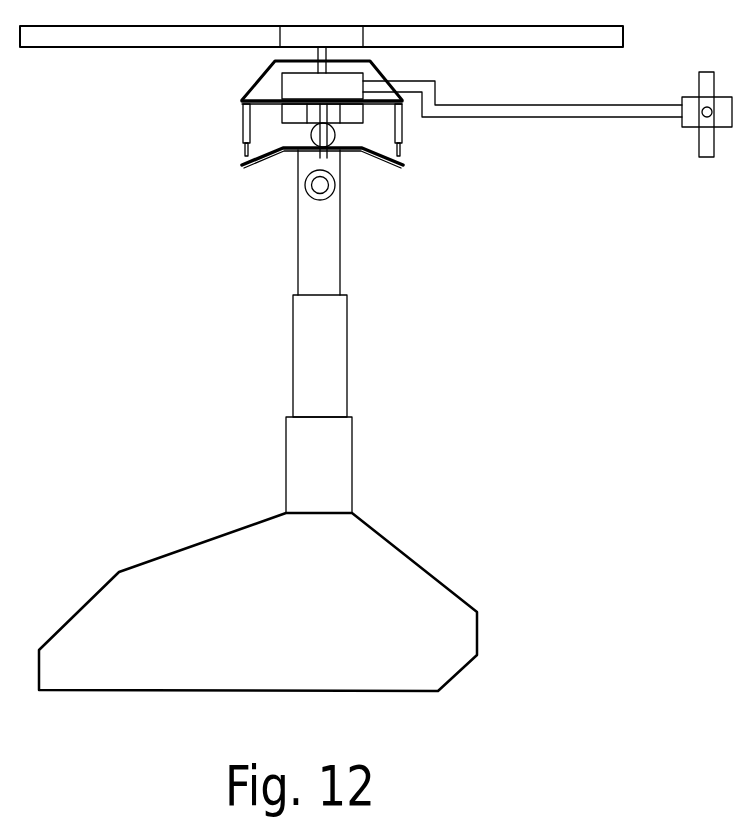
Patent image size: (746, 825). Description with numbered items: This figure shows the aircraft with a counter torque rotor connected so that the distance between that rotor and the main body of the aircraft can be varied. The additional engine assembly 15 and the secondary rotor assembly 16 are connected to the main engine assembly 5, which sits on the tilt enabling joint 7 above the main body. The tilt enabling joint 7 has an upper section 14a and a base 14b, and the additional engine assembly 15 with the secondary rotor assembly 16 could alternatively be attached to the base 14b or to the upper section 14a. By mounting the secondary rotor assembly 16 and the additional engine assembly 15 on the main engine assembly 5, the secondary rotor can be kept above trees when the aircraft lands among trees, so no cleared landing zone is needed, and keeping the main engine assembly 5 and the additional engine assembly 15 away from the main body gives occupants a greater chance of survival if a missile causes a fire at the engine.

The main engine assembly 5 is at (302, 83).
The tilt enabling joint 7 is at (327, 200).
The upper section 14a is at (378, 103).
The base 14b is at (376, 153).
The additional engine assembly 15 is at (685, 125).
The secondary rotor assembly 16 is at (708, 143).